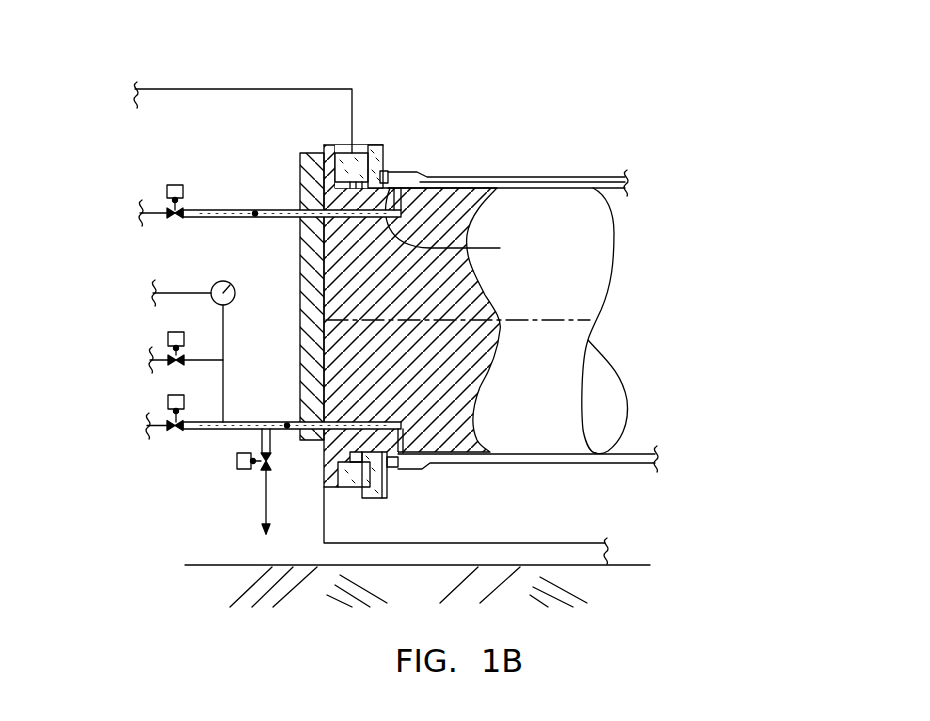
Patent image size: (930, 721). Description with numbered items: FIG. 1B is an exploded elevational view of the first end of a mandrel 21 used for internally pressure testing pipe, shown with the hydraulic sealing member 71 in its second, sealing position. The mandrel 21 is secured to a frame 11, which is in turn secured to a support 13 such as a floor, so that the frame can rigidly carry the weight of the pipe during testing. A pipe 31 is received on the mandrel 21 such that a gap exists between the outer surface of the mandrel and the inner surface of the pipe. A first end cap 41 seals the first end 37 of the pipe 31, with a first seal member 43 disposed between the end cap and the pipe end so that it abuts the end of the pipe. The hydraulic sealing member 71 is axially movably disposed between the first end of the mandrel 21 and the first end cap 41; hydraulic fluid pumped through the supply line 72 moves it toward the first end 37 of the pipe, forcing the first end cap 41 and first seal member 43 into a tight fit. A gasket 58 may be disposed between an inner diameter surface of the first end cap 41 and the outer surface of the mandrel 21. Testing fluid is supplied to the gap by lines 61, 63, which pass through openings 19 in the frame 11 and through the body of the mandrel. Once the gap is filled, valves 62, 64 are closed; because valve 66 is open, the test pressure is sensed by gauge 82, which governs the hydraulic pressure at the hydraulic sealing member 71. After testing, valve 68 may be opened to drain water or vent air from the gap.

The frame 11 is at (512, 542).
The support 13 is at (637, 566).
The openings 19 is at (300, 220).
The mandrel 21 is at (612, 255).
The pipe 31 is at (560, 177).
The first end of the pipe 37 is at (393, 480).
The first end cap 41 is at (369, 145).
The first seal member 43 is at (387, 155).
The gasket 58 is at (462, 225).
The testing line 61 is at (254, 210).
The valve 62 is at (170, 185).
The line 63 is at (287, 429).
The valve 64 is at (174, 432).
The valve 66 is at (170, 333).
The valve 68 is at (250, 471).
The hydraulic sealing member 71 is at (345, 147).
The supply line 72 is at (250, 89).
The gauge 82 is at (217, 280).